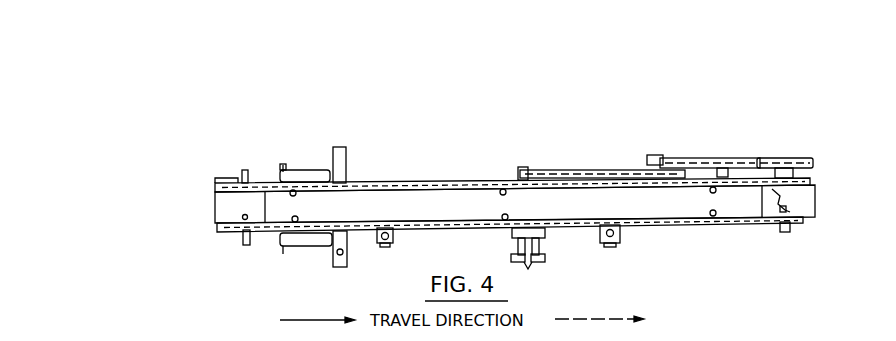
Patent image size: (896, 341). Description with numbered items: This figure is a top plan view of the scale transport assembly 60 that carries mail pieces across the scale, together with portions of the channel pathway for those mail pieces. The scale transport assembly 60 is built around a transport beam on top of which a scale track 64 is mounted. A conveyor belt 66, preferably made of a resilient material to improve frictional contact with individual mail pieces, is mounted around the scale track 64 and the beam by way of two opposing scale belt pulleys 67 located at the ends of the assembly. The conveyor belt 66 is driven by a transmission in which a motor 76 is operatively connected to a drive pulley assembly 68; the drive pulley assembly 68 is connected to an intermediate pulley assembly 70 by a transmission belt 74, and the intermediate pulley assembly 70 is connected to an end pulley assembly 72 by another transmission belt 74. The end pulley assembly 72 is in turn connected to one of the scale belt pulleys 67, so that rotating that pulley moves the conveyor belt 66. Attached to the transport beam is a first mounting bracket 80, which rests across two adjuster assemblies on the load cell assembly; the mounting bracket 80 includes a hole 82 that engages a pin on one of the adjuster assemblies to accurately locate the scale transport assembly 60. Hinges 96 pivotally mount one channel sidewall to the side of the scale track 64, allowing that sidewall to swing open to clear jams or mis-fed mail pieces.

The scale transport assembly 60 is at (467, 178).
The scale track 64 is at (377, 205).
The conveyor belt 66 is at (800, 200).
The scale belt pulleys 67 is at (210, 232).
The drive pulley assembly 68 is at (527, 168).
The intermediate pulley assembly 70 is at (638, 165).
The end pulley assembly 72 is at (788, 150).
The transmission belt 74 is at (567, 166).
The motor 76 is at (545, 251).
The first mounting bracket 80 is at (345, 152).
The hole 82 is at (330, 255).
The hinges 96 is at (540, 260).